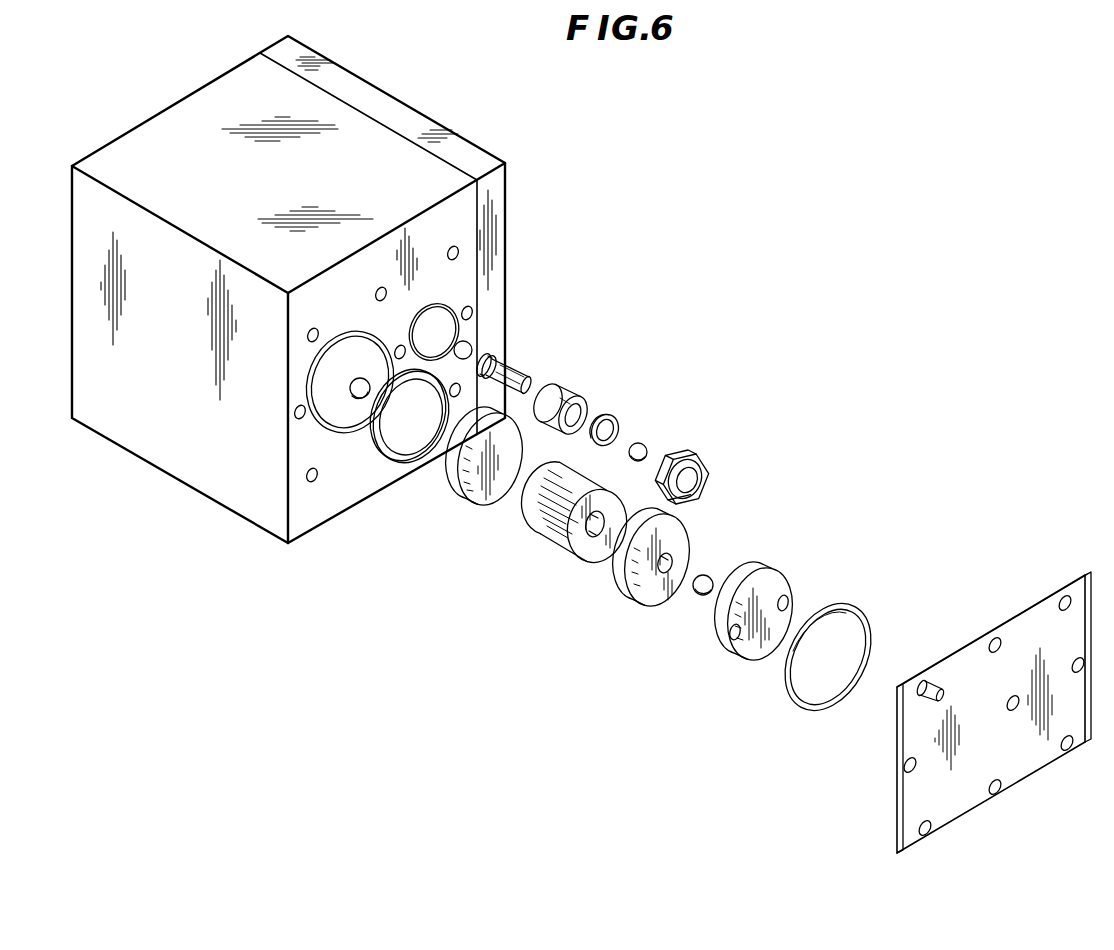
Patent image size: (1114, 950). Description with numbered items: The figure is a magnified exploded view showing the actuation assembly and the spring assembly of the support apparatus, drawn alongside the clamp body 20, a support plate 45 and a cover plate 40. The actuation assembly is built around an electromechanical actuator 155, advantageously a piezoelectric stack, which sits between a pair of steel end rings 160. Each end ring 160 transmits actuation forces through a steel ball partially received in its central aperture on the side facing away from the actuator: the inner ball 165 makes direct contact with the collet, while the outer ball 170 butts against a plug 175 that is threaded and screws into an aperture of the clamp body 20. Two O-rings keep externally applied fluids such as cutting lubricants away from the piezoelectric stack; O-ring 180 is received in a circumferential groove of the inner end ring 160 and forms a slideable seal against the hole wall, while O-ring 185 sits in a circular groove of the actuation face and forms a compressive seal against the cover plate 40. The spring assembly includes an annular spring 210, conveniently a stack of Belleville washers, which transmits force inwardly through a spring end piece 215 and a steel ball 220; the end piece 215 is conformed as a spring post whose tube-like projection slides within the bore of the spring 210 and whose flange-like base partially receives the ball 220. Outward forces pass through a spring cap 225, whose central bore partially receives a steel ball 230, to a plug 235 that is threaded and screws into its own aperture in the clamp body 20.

The clamp body 20 is at (183, 98).
The support plate 45 is at (481, 148).
The cover plate 40 is at (1064, 590).
The inner steel ball 165 is at (355, 378).
The O-ring 180 is at (377, 440).
The steel ball 220 is at (472, 343).
The spring end piece 215 is at (516, 368).
The spring 210 is at (570, 392).
The spring cap 225 is at (615, 422).
The steel ball 230 is at (648, 446).
The plug 235 is at (707, 470).
The end ring 160 is at (470, 490).
The electromechanical actuator 155 is at (540, 533).
The outer steel ball 170 is at (700, 594).
The plug 175 is at (730, 652).
The O-ring 185 is at (796, 705).